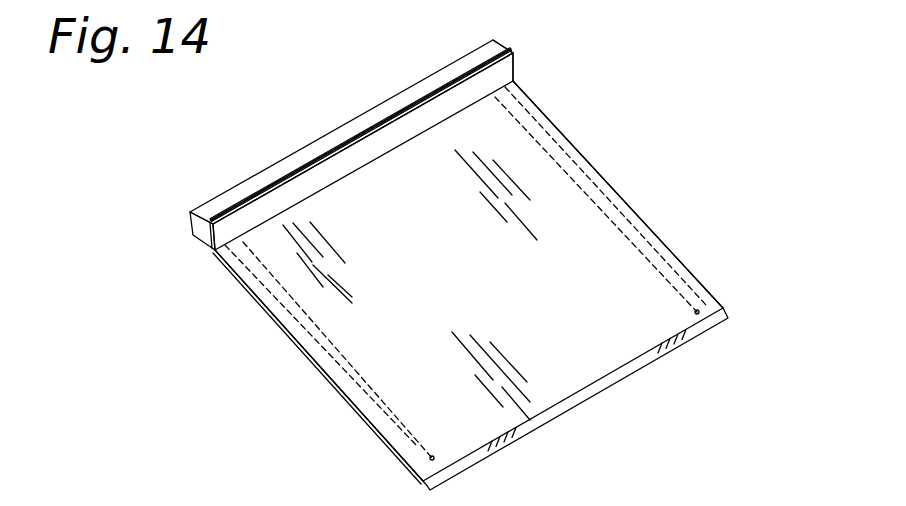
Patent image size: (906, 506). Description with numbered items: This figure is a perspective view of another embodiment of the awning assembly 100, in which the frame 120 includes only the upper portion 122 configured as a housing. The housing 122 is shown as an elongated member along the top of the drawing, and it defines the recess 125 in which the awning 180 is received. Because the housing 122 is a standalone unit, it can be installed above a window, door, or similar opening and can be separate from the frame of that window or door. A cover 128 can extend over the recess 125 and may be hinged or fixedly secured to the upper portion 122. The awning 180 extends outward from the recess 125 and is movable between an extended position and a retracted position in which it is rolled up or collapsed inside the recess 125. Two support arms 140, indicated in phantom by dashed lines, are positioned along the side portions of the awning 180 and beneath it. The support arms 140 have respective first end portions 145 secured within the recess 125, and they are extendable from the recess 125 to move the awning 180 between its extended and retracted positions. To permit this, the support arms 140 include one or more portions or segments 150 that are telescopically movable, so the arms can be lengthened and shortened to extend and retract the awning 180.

The awning assembly 100 is at (718, 107).
The frame 120 is at (303, 153).
The upper portion 122 is at (373, 113).
The recessed portion 125 is at (250, 193).
The cover 128 is at (563, 37).
The support arms 140 is at (533, 100).
The first end portions 145 is at (565, 138).
The portions or segments 150 is at (618, 195).
The awning 180 is at (577, 367).